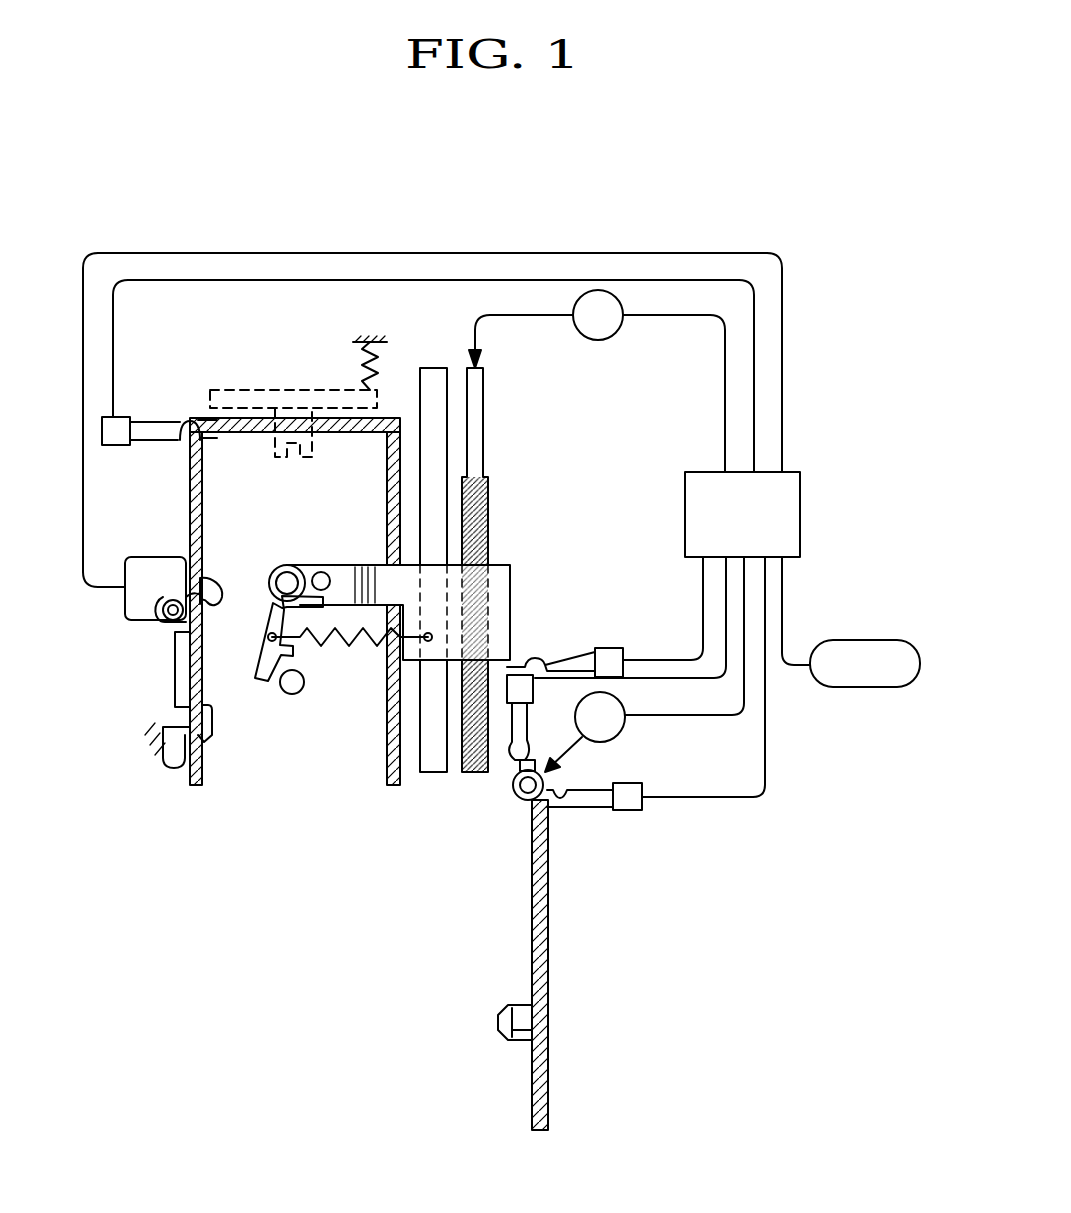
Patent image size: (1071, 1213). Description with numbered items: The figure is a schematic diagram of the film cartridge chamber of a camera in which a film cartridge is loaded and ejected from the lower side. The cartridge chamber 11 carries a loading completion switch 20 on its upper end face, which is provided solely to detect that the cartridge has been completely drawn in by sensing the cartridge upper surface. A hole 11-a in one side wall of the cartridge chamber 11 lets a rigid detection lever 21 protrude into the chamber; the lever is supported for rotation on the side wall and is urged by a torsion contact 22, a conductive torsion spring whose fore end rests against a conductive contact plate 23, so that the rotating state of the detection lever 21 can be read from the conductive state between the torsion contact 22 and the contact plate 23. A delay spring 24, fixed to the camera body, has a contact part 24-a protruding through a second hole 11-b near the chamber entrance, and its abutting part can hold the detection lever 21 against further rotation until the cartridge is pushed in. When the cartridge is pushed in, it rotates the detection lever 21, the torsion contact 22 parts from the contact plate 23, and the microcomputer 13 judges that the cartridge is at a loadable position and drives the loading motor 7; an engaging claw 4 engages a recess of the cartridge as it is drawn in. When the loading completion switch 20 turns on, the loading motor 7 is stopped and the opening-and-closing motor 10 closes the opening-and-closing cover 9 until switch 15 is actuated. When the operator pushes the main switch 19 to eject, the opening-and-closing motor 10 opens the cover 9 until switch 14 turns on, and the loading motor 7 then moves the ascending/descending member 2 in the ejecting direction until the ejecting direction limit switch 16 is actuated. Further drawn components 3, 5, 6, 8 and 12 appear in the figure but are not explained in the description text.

The ascending/descending member 2 is at (510, 585).
The spring 3 is at (347, 647).
The engaging claw 4 is at (263, 677).
The lead screw 5 is at (483, 405).
The guide plate 6 is at (448, 395).
The loading motor 7 is at (600, 342).
The spring 8 is at (382, 363).
The opening-and-closing cover 9 is at (548, 875).
The opening-and-closing motor 10 is at (625, 730).
The cartridge chamber 11 is at (395, 790).
The hole 11-a is at (197, 573).
The hole 11-b is at (207, 727).
The tray 12 is at (278, 390).
The microcomputer 13 is at (800, 505).
The switch 14 is at (513, 693).
The switch 15 is at (628, 812).
The ejecting direction limit switch 16 is at (608, 650).
The main switch 19 is at (855, 690).
The loading completion switch 20 is at (122, 420).
The detection lever 21 is at (213, 598).
The torsion contact 22 is at (150, 617).
The contact plate 23 is at (160, 557).
The delay spring 24 is at (175, 670).
The contact part 24-a is at (203, 727).